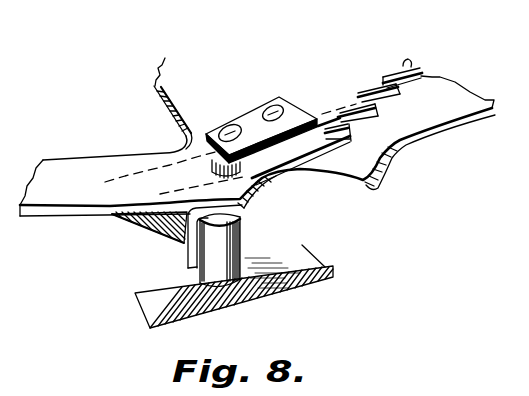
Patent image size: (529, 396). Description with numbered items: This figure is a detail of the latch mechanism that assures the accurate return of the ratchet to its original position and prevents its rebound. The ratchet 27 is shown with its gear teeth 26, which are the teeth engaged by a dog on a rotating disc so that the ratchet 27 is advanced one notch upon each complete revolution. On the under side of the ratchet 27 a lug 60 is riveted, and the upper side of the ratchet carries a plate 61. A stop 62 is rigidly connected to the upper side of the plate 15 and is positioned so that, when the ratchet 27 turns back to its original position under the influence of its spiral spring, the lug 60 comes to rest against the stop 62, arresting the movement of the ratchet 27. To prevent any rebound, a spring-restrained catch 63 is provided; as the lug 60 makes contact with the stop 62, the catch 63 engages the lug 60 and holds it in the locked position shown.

The plate 15 is at (317, 262).
The gear teeth 26 is at (420, 73).
The ratchet 27 is at (370, 40).
The lug 60 is at (237, 207).
The plate 61 is at (295, 113).
The stop 62 is at (235, 242).
The spring-restrained catch 63 is at (160, 230).